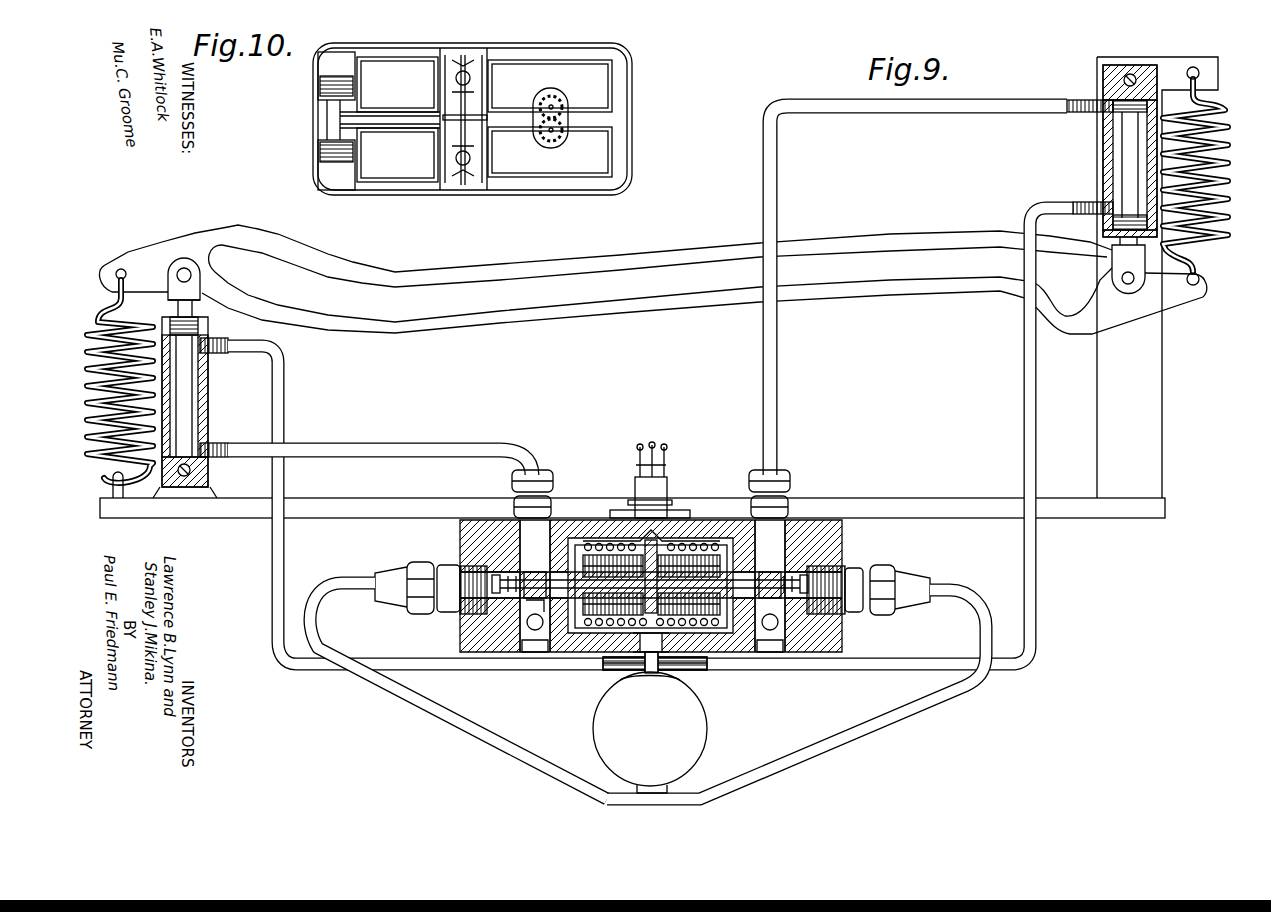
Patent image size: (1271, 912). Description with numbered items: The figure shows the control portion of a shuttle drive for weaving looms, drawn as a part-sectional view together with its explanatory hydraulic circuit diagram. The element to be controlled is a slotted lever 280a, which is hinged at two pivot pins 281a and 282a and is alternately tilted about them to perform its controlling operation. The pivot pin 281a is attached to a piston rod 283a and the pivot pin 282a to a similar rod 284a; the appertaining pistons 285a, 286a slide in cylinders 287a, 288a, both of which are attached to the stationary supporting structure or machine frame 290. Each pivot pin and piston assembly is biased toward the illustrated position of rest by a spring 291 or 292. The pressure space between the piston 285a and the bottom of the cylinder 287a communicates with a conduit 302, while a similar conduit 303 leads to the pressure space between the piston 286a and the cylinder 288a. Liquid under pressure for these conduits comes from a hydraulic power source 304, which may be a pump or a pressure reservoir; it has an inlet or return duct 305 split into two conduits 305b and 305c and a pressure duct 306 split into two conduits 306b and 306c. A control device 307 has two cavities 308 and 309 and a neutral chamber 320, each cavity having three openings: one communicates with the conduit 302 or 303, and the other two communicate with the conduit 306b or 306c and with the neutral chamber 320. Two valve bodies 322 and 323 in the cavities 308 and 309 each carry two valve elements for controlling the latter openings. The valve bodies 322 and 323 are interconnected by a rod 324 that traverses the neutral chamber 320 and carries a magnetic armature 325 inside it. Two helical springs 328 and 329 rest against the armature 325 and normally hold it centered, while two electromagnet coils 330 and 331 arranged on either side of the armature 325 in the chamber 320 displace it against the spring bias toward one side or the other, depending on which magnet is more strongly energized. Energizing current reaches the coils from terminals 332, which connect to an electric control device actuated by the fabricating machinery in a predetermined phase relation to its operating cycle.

In FIG. 9, the slotted lever 280a is at (597, 252).
In FIG. 9, the pivot pin 281a is at (184, 268).
In FIG. 9, the pivot pin 282a is at (1136, 286).
In FIG. 9, the piston rod 283a is at (214, 345).
In FIG. 9, the rod 284a is at (1128, 166).
In FIG. 9, the piston 285a is at (210, 448).
In FIG. 10, the piston 285a is at (320, 80).
In FIG. 9, the piston 286a is at (1123, 118).
In FIG. 10, the piston 286a is at (322, 164).
In FIG. 9, the cylinder 287a is at (207, 400).
In FIG. 10, the cylinder 287a is at (358, 86).
In FIG. 9, the cylinder 288a is at (1107, 145).
In FIG. 10, the cylinder 288a is at (358, 160).
In FIG. 9, the stationary supporting structure or machine frame 290 is at (236, 518).
In FIG. 9, the spring 291 is at (100, 318).
In FIG. 10, the spring 291 is at (322, 92).
In FIG. 9, the spring 292 is at (1184, 240).
In FIG. 10, the spring 292 is at (322, 152).
In FIG. 9, the conduit 302 is at (357, 450).
In FIG. 9, the conduit 303 is at (780, 420).
In FIG. 9, the hydraulic power source 304 is at (707, 718).
In FIG. 10, the hydraulic power source 304 is at (560, 95).
In FIG. 9, the inlet or return duct 305 is at (700, 660).
In FIG. 10, the inlet or return duct 305 is at (530, 126).
In FIG. 9, the conduit 305b is at (284, 546).
In FIG. 10, the conduit 305b is at (390, 108).
In FIG. 9, the conduit 305c is at (1023, 434).
In FIG. 9, the pressure duct 306 is at (628, 788).
In FIG. 10, the pressure duct 306 is at (585, 128).
In FIG. 9, the conduit 306b is at (482, 738).
In FIG. 10, the conduit 306b is at (582, 52).
In FIG. 9, the conduit 306c is at (832, 745).
In FIG. 10, the conduit 306c is at (576, 186).
In FIG. 9, the control device 307 is at (834, 638).
In FIG. 9, the cavity 308 is at (540, 548).
In FIG. 10, the cavity 308 is at (492, 84).
In FIG. 9, the cavity 309 is at (840, 540).
In FIG. 10, the cavity 309 is at (492, 157).
In FIG. 9, the neutral chamber 320 is at (730, 537).
In FIG. 10, the neutral chamber 320 is at (442, 127).
In FIG. 9, the valve body 322 is at (533, 584).
In FIG. 10, the valve body 322 is at (455, 82).
In FIG. 9, the valve body 323 is at (772, 584).
In FIG. 10, the valve body 323 is at (456, 158).
In FIG. 9, the rod 324 is at (558, 650).
In FIG. 9, the magnetic armature 325 is at (672, 548).
In FIG. 10, the magnetic armature 325 is at (490, 100).
In FIG. 9, the helical spring 328 is at (603, 537).
In FIG. 9, the helical spring 329 is at (687, 540).
In FIG. 9, the electromagnet coil 330 is at (610, 628).
In FIG. 9, the electromagnet coil 331 is at (735, 640).
In FIG. 9, the terminals 332 is at (650, 471).